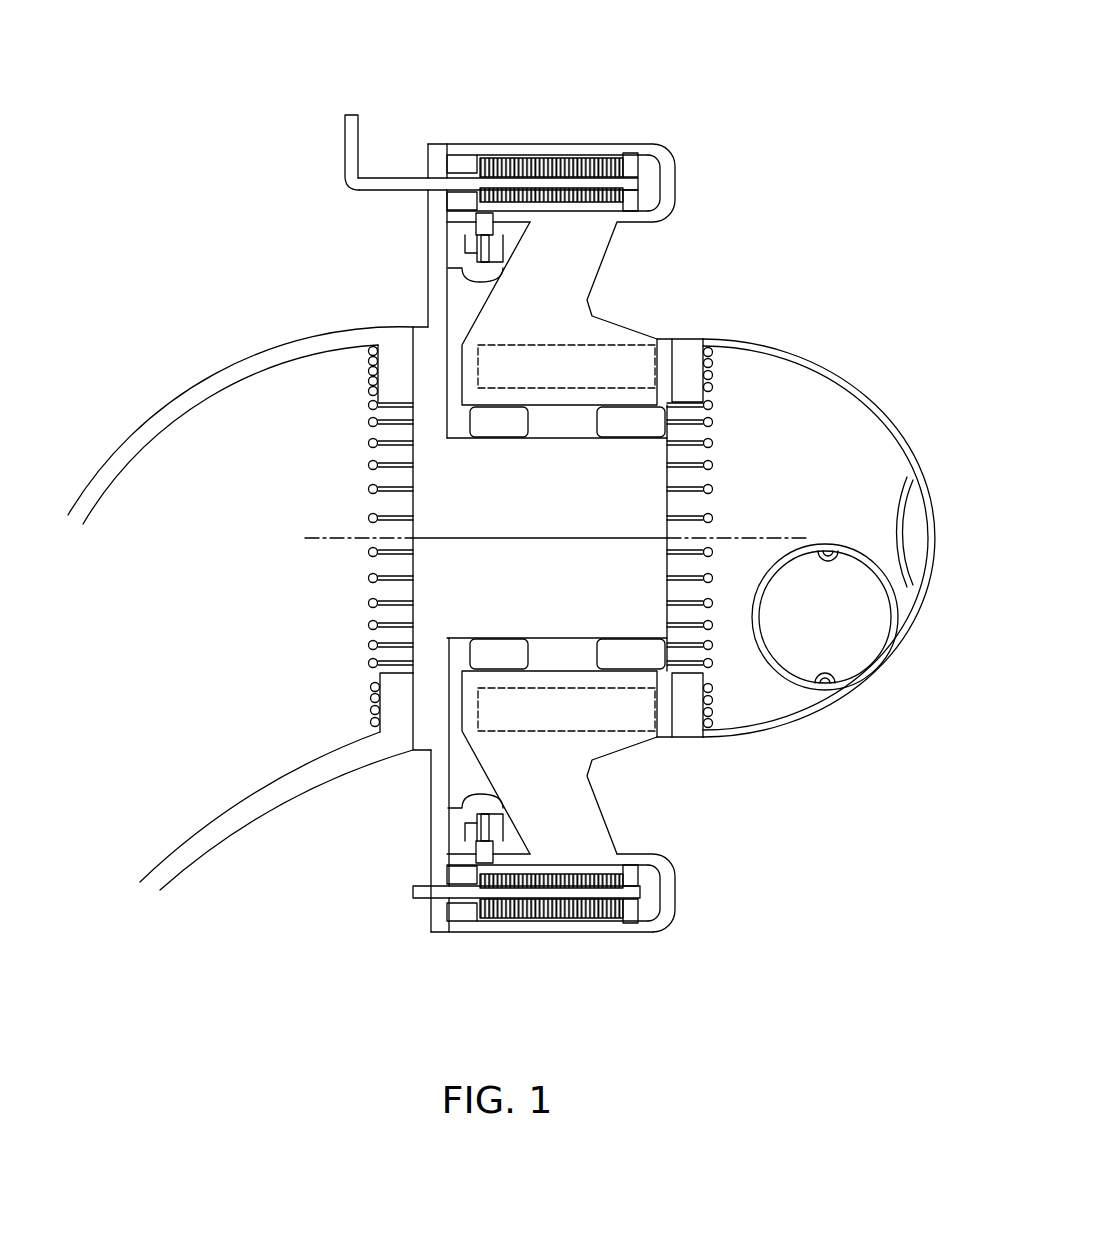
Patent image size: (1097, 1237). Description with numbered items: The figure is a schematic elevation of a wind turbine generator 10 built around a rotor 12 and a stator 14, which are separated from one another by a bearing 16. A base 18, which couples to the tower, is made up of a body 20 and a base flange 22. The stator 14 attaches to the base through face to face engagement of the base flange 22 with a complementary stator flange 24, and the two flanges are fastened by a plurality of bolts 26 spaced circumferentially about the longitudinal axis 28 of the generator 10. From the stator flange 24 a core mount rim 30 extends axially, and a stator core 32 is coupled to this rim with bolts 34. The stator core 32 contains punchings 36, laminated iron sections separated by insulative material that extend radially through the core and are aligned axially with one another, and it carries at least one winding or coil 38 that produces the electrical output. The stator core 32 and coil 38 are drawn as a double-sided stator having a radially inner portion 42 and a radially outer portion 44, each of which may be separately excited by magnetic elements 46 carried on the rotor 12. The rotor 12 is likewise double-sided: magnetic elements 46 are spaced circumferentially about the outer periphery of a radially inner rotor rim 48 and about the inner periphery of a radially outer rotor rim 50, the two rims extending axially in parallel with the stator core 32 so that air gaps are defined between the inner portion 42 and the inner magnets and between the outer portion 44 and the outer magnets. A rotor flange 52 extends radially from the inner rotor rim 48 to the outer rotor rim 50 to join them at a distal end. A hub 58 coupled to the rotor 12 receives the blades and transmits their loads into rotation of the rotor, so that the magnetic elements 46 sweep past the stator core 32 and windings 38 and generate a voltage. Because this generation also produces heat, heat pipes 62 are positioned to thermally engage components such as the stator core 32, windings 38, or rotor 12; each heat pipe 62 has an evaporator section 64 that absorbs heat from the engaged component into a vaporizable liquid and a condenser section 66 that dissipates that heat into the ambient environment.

The wind turbine generator 10 is at (746, 56).
The rotor 12 is at (600, 342).
The stator 14 is at (440, 282).
The bearing 16 is at (430, 484).
The base 18 is at (232, 365).
The body 20 is at (272, 768).
The base flange 22 is at (392, 695).
The stator flange 24 is at (427, 720).
The bolts 26 is at (395, 662).
The longitudinal axis 28 is at (323, 542).
The core mount rim 30 is at (432, 870).
The stator core 32 is at (494, 198).
The bolts 34 is at (413, 892).
The punchings 36 is at (510, 160).
The winding or coil 38 is at (477, 162).
The radially inner portion 42 is at (620, 868).
The radially outer portion 44 is at (655, 928).
The magnetic element 46 is at (620, 860).
The radially inner rotor rim 48 is at (594, 868).
The radially outer rotor rim 50 is at (600, 910).
The rotor flange 52 is at (668, 887).
The hub 58 is at (896, 643).
The heat pipe 62 is at (348, 187).
The evaporator section 64 is at (636, 183).
The condenser section 66 is at (355, 142).